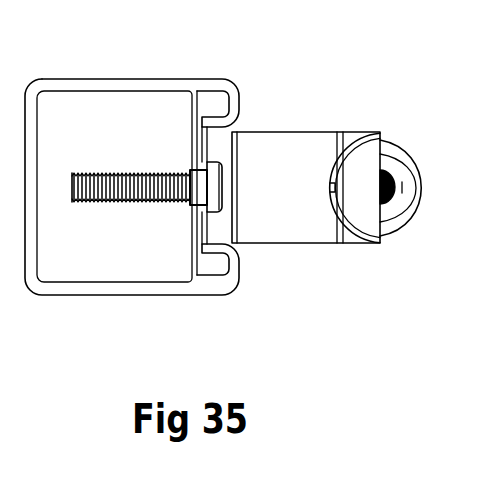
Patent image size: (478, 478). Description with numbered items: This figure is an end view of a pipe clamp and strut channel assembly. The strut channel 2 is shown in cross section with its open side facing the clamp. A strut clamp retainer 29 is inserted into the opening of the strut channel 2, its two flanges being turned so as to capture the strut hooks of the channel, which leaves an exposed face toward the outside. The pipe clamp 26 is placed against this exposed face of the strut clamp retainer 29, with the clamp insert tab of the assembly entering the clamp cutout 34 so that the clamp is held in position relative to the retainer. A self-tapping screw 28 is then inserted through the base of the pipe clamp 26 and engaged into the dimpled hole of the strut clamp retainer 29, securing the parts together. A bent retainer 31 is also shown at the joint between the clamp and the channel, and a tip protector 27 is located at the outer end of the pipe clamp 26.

The strut channel 2 is at (107, 75).
The strut clamp retainer 29 is at (191, 122).
The self-tapping screw 28 is at (142, 203).
The clamp cutout 34 is at (222, 216).
The bent retainer 31 is at (208, 183).
The pipe clamp 26 is at (306, 187).
The tip protector 27 is at (352, 193).